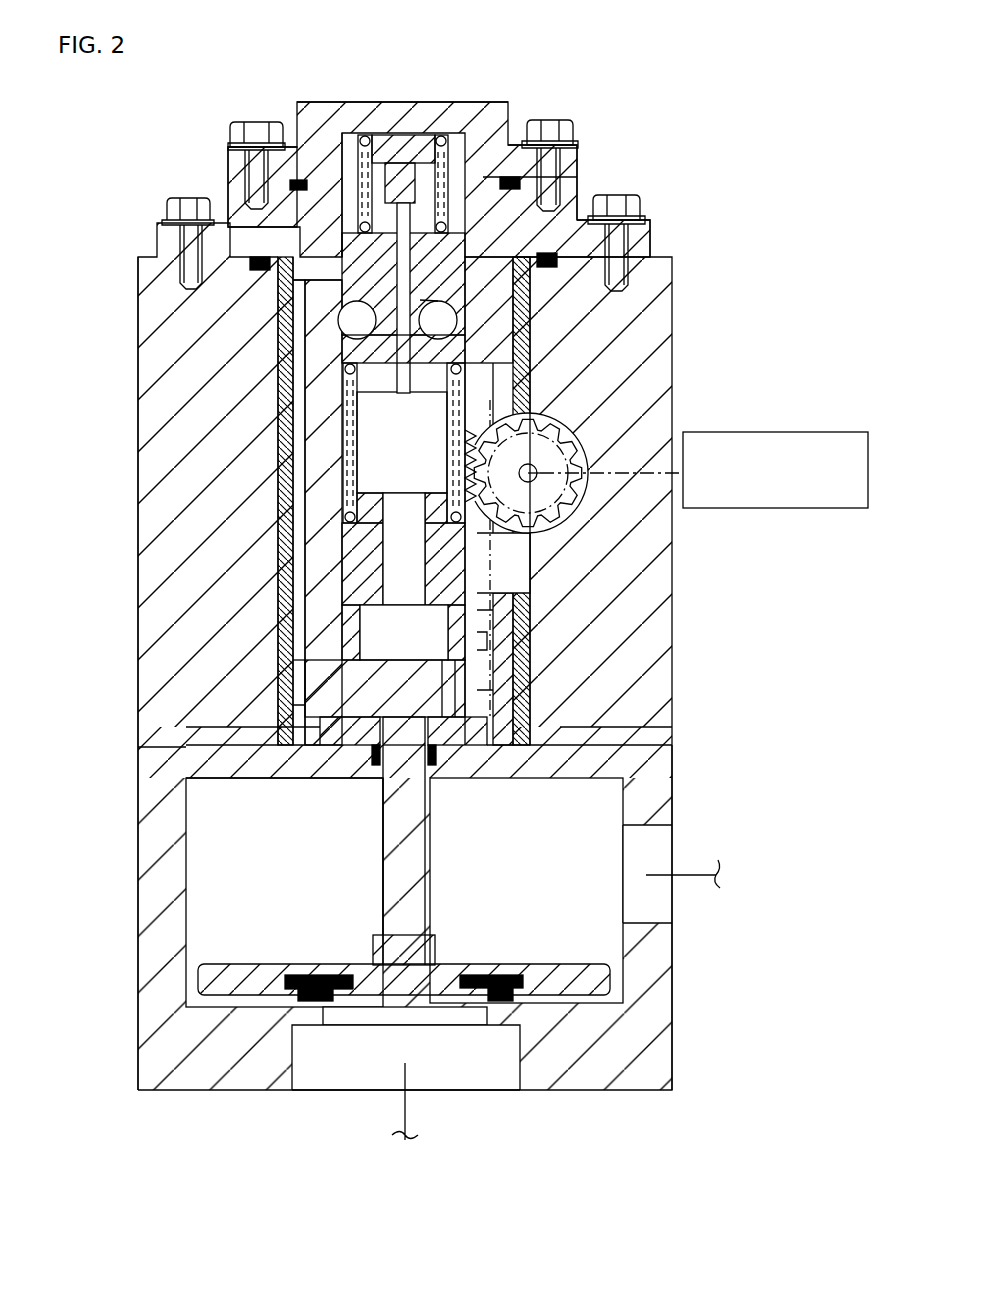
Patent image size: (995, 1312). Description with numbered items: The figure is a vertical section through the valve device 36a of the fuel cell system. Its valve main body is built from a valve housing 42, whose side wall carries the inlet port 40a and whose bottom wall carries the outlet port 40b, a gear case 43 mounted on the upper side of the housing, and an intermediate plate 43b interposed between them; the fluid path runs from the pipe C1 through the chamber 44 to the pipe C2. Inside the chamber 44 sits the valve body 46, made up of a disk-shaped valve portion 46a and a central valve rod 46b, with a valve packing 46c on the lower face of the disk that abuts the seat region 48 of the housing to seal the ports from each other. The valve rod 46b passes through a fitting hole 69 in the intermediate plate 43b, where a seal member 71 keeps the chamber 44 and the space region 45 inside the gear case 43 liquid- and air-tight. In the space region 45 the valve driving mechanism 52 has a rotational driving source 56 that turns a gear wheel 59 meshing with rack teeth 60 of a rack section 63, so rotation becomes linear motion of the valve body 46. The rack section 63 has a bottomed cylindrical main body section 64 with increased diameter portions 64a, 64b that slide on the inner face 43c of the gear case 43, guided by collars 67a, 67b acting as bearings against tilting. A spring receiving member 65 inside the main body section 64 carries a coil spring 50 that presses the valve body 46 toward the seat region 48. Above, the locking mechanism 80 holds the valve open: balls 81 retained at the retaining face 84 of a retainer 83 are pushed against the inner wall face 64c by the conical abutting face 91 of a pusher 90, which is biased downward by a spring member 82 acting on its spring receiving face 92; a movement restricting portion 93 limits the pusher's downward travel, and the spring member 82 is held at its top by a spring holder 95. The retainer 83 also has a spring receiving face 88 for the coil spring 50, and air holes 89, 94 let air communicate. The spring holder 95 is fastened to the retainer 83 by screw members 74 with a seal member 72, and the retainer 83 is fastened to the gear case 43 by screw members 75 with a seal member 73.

The valve device 36a is at (148, 168).
The inlet port 40a is at (653, 833).
The outlet port 40b is at (520, 1063).
The valve housing 42 is at (675, 772).
The upper housing 43 is at (675, 650).
The intermediate plate 43b is at (675, 735).
The inner face 43c is at (290, 585).
The chamber 44 is at (284, 808).
The space region 45 is at (500, 585).
The valve body 46 is at (373, 1000).
The valve portion 46a is at (407, 990).
The valve rod 46b is at (383, 872).
The valve packing 46c is at (335, 1000).
The seat region 48 is at (290, 995).
The coil spring 50 is at (287, 570).
The valve driving mechanism 52 is at (567, 503).
The rotational driving source 56 is at (757, 508).
The gear wheel 59 is at (515, 560).
The rack teeth 60 is at (527, 630).
The rack section 63 is at (480, 670).
The main body section 64 is at (330, 515).
The increased diameter portion 64a is at (308, 395).
The increased diameter portion 64b is at (305, 718).
The wall face 64c is at (318, 445).
The spring receiving member 65 is at (352, 572).
The collar 67a is at (300, 300).
The collar 67b is at (303, 680).
The fitting hole 69 is at (415, 770).
The seal member 71 is at (437, 750).
The seal member 72 is at (295, 145).
The seal member 73 is at (173, 247).
The screw member 74 is at (573, 130).
The screw member 75 is at (627, 197).
The locking mechanism 80 is at (487, 78).
The ball 81 is at (338, 322).
The spring member 82 is at (507, 127).
The retainer 83 is at (652, 233).
The retaining face 84 is at (470, 372).
The spring receiving face 88 is at (580, 437).
The air hole 89 is at (400, 385).
The pusher 90 is at (422, 196).
The abutting face 91 is at (460, 313).
The spring receiving face 92 is at (350, 270).
The movement restricting portion 93 is at (503, 283).
The air hole 94 is at (405, 190).
The spring holder 95 is at (355, 150).
The pipe C1 is at (693, 877).
The pipe C2 is at (410, 1120).